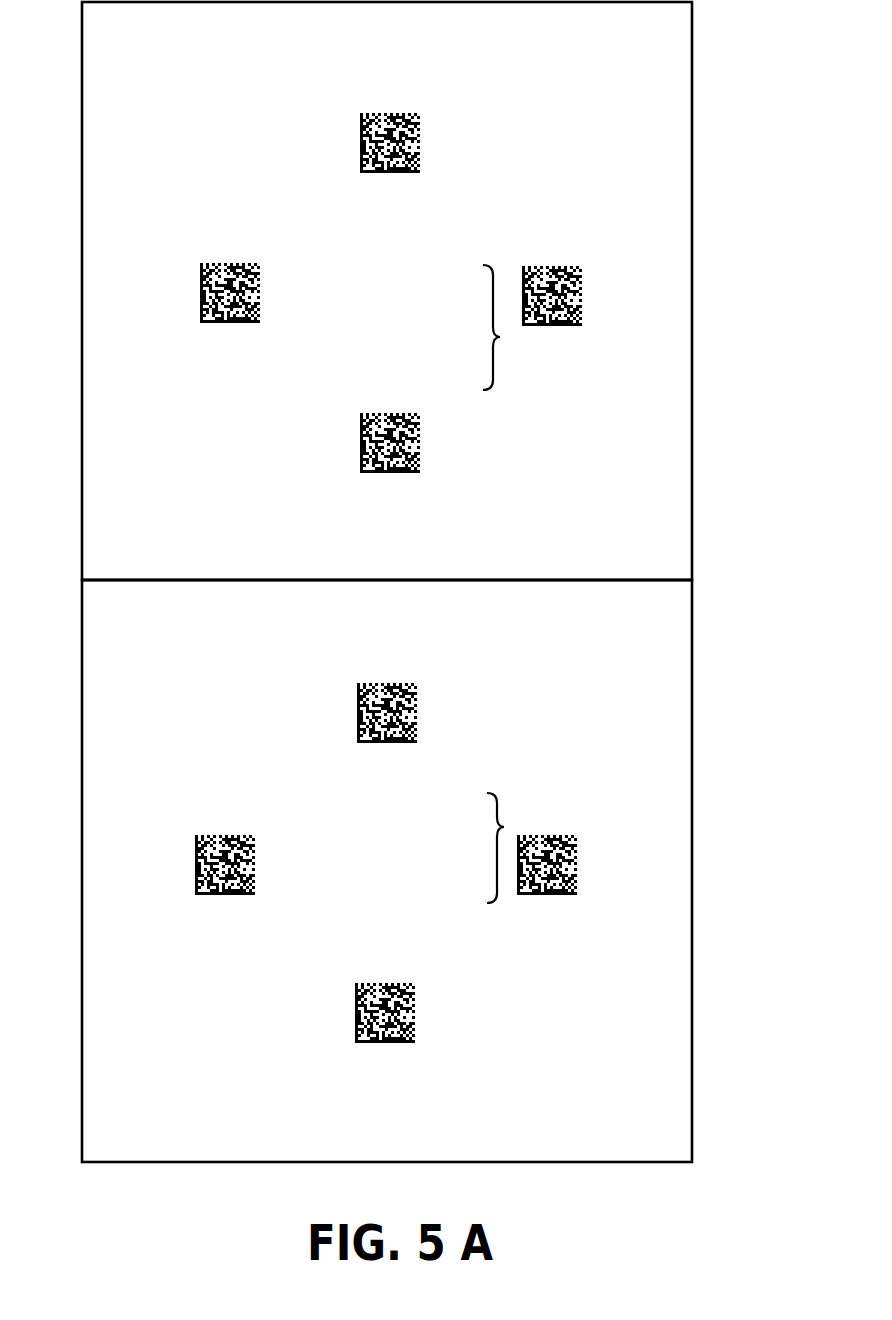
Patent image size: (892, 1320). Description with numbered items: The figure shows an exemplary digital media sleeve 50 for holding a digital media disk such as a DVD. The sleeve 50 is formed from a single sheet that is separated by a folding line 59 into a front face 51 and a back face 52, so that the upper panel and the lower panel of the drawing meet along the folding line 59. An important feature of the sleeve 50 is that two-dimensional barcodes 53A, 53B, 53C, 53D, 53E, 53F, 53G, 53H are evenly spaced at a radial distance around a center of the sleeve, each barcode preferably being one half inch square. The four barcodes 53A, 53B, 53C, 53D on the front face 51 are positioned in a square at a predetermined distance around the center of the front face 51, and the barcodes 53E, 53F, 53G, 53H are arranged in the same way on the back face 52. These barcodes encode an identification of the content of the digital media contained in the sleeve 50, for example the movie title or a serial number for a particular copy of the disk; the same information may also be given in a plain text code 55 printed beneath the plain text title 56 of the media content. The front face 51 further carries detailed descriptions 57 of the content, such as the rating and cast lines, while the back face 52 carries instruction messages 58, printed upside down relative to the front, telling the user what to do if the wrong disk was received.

The digital media sleeve 50 is at (440, 582).
The front face 51 is at (667, 86).
The back face 52 is at (663, 773).
The 2-D barcode 53A is at (420, 143).
The 2-D barcode 53B is at (582, 303).
The 2-D barcode 53C is at (420, 440).
The 2-D barcode 53D is at (200, 298).
The 2-D barcode 53E is at (418, 728).
The 2-D barcode 53F is at (577, 862).
The 2-D barcode 53G is at (413, 1005).
The 2-D barcode 53H is at (195, 862).
The plain text code 55 is at (338, 233).
The plain text title 56 is at (283, 195).
The detailed descriptions 57 is at (500, 337).
The instruction messages 58 is at (504, 827).
The folding line 59 is at (540, 580).